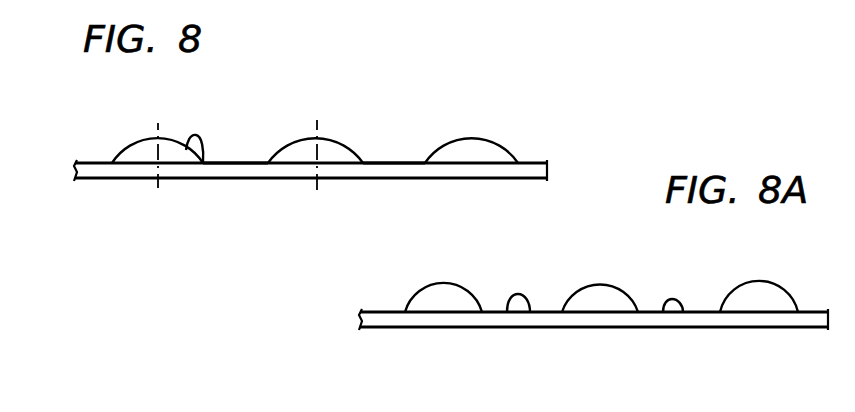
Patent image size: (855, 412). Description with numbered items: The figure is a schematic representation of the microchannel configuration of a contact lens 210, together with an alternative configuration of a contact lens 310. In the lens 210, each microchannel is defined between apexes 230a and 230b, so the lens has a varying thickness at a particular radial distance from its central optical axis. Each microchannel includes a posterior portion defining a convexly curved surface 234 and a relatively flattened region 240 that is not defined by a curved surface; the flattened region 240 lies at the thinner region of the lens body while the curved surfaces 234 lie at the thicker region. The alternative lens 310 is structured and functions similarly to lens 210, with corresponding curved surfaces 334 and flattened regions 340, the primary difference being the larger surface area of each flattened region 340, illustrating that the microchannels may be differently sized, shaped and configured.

In FIG. 8, the contact lens 210 is at (445, 104).
In FIG. 8, the apex 230a is at (160, 140).
In FIG. 8, the apex 230b is at (317, 140).
In FIG. 8, the convexly curved surface 234 is at (490, 138).
In FIG. 8, the flattened region 240 is at (232, 162).
In FIG. 8A, the contact lens 310 is at (693, 276).
In FIG. 8A, the convexly curved surface 334 is at (465, 285).
In FIG. 8A, the flattened region 340 is at (512, 298).